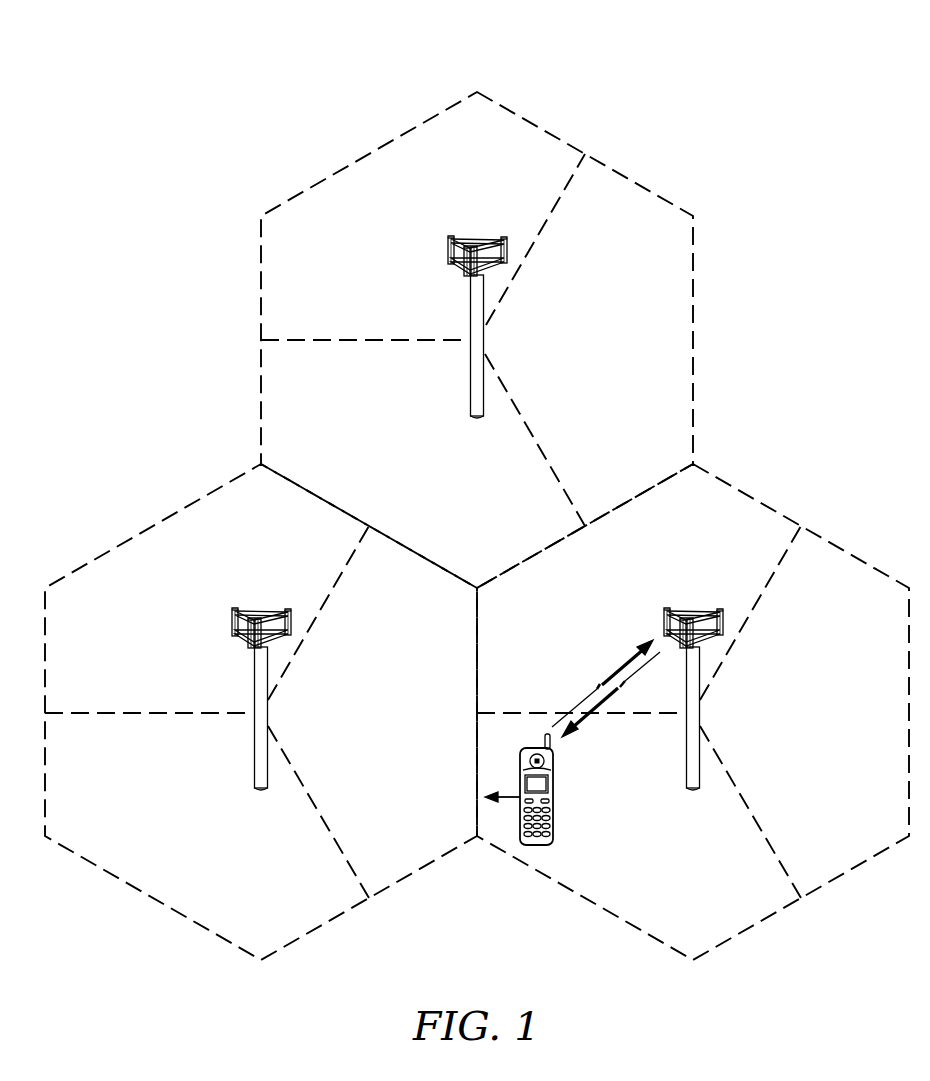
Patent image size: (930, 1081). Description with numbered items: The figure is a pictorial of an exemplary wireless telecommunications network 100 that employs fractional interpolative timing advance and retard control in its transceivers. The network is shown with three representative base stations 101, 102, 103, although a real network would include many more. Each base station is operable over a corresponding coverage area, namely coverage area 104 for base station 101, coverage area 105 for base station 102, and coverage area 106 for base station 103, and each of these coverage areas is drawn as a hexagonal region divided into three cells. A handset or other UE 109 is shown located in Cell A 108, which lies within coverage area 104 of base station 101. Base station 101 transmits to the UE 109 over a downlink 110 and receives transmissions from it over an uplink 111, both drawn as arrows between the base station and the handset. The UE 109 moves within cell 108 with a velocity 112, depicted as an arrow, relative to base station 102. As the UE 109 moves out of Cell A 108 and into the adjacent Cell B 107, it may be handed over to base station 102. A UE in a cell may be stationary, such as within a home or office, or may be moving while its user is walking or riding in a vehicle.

The wireless telecommunications network 100 is at (681, 99).
The base station 101 is at (700, 713).
The base station 102 is at (256, 746).
The base station 103 is at (469, 372).
The coverage area 104 is at (840, 878).
The coverage area 105 is at (152, 900).
The coverage area 106 is at (694, 340).
The Cell B 107 is at (425, 836).
The Cell A 108 is at (702, 911).
The UE 109 is at (553, 808).
The downlink 110 is at (608, 702).
The uplink 111 is at (620, 662).
The velocity 112 is at (510, 800).